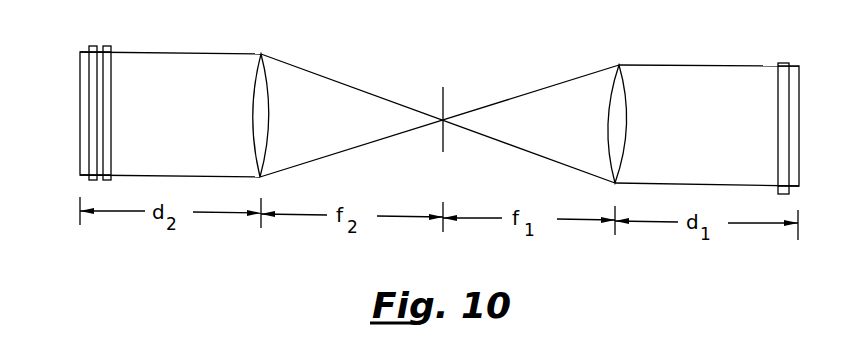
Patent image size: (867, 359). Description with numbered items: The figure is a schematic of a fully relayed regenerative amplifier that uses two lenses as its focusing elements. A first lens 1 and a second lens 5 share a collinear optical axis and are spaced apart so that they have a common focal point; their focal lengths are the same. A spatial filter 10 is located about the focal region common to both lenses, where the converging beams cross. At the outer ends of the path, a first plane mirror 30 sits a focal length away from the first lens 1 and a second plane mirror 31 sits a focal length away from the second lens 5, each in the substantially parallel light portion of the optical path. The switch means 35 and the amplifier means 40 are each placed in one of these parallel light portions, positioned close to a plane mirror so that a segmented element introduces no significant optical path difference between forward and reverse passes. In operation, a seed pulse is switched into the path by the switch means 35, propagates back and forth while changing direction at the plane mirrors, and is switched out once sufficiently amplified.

The first lens 1 is at (617, 67).
The second lens 5 is at (261, 54).
The spatial filter 10 is at (443, 98).
The first plane mirror 30 is at (800, 108).
The second plane mirror 31 is at (80, 100).
The switch means 35 is at (91, 46).
The amplifier means 40 is at (112, 46).